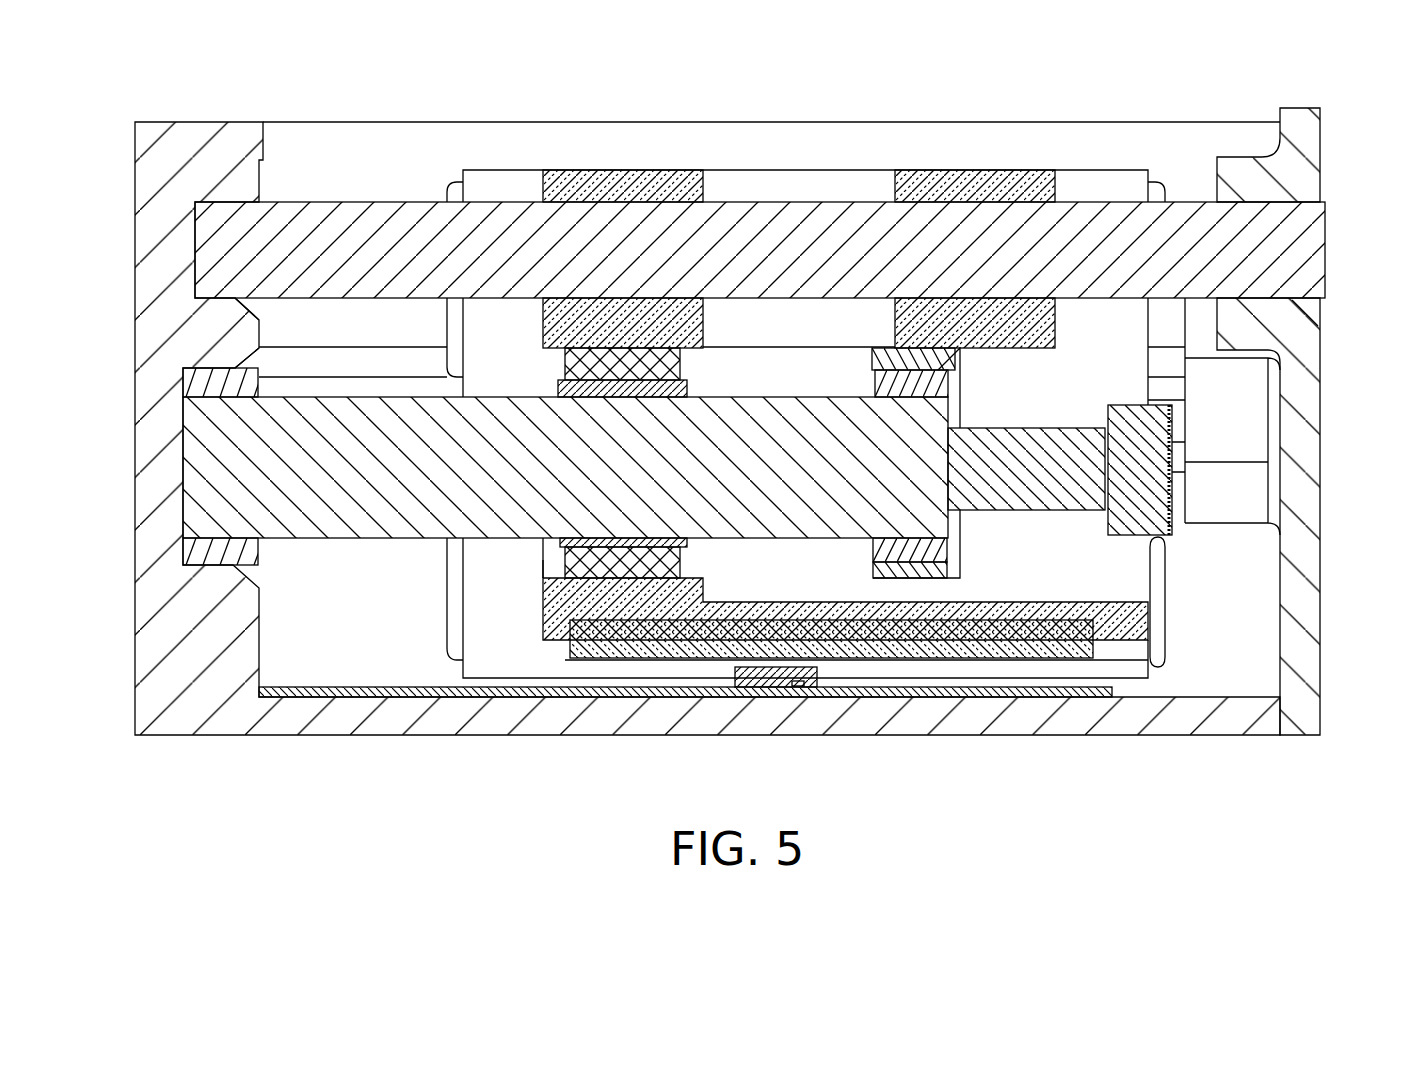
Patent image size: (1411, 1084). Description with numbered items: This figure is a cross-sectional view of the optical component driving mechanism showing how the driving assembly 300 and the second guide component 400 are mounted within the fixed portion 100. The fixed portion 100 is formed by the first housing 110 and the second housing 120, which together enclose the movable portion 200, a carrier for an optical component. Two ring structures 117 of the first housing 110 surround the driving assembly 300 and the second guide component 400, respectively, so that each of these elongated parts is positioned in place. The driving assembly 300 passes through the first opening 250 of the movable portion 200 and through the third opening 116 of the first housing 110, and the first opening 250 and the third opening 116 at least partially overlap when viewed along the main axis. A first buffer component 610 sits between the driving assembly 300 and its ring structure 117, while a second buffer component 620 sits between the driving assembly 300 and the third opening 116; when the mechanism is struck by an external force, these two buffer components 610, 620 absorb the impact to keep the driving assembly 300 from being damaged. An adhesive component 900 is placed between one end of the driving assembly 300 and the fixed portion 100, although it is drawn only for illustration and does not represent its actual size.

The fixed portion 100 is at (717, 371).
The first housing 110 is at (133, 663).
The second housing 120 is at (1320, 670).
The ring structure 117 is at (212, 200).
The second guide component 400 is at (330, 237).
The movable portion 200 is at (798, 160).
The driving assembly 300 is at (355, 515).
The first buffer component 610 is at (190, 383).
The second buffer component 620 is at (922, 555).
The third opening 116 is at (888, 578).
The first opening 250 is at (552, 573).
The adhesive component 900 is at (1175, 502).